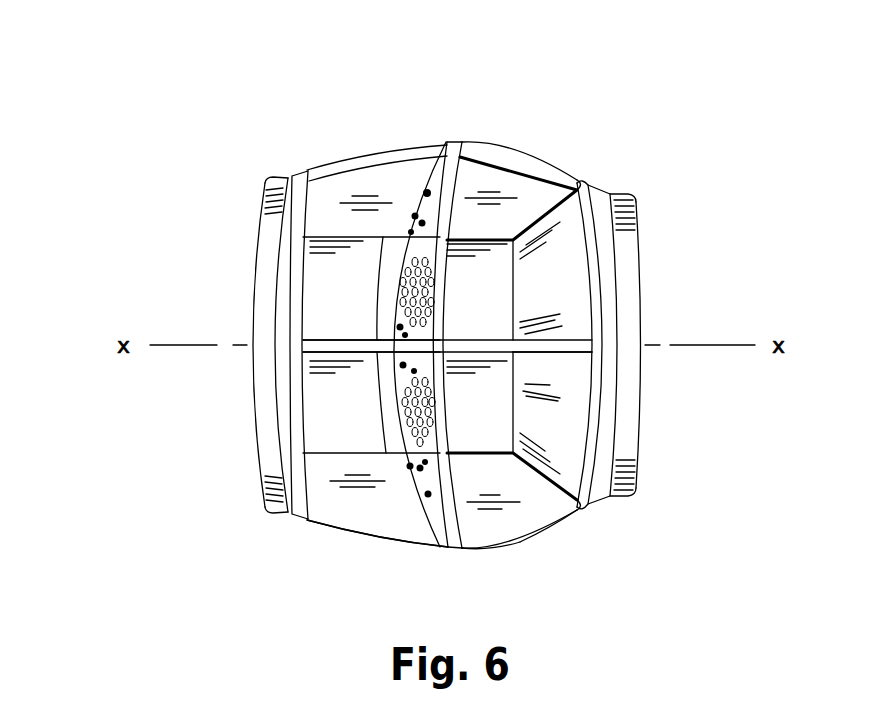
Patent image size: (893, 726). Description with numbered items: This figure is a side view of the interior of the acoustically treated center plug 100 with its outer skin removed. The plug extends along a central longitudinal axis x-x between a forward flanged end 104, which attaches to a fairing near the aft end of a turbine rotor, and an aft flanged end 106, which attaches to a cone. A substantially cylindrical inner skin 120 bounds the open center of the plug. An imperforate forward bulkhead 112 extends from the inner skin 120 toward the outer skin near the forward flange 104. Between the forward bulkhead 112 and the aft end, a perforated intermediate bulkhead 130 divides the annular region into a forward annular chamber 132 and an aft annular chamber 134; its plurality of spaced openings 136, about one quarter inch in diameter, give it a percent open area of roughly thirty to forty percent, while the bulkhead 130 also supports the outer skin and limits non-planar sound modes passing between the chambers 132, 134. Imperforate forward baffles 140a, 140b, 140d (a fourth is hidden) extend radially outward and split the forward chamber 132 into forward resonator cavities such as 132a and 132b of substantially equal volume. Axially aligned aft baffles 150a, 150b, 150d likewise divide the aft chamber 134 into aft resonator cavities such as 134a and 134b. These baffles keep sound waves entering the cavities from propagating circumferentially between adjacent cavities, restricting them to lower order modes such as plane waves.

The center plug 100 is at (198, 112).
The forward flanged end 104 is at (628, 235).
The aft flanged end 106 is at (260, 227).
The forward bulkhead 112 is at (553, 417).
The inner skin 120 is at (317, 400).
The perforated intermediate bulkhead 130 is at (438, 475).
The forward annular chamber 132 is at (523, 537).
The forward resonator cavity 132a is at (487, 437).
The forward resonator cavity 132b is at (506, 258).
The aft annular chamber 134 is at (333, 502).
The aft resonator cavity 134a is at (330, 476).
The aft resonator cavity 134b is at (328, 283).
The spaced openings 136 is at (410, 453).
The forward baffle 140a is at (558, 355).
The forward baffle 140b is at (495, 160).
The forward baffle 140d is at (477, 549).
The aft baffle 150a is at (325, 340).
The aft baffle 150b is at (360, 183).
The aft baffle 150d is at (427, 543).